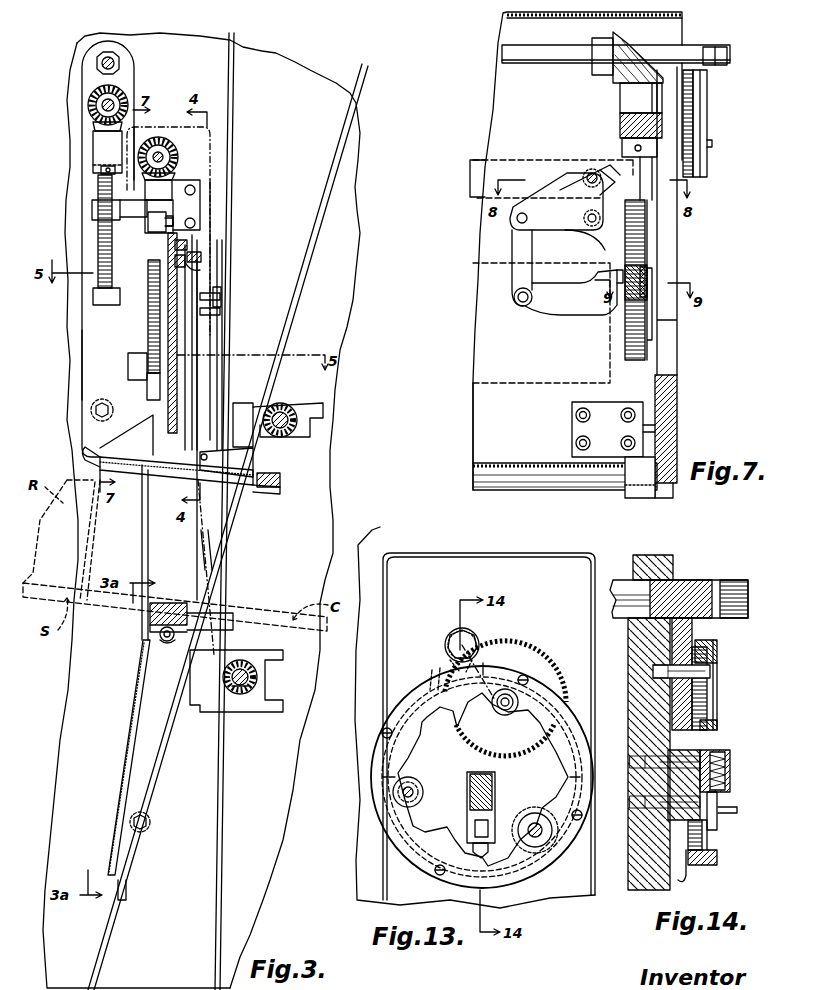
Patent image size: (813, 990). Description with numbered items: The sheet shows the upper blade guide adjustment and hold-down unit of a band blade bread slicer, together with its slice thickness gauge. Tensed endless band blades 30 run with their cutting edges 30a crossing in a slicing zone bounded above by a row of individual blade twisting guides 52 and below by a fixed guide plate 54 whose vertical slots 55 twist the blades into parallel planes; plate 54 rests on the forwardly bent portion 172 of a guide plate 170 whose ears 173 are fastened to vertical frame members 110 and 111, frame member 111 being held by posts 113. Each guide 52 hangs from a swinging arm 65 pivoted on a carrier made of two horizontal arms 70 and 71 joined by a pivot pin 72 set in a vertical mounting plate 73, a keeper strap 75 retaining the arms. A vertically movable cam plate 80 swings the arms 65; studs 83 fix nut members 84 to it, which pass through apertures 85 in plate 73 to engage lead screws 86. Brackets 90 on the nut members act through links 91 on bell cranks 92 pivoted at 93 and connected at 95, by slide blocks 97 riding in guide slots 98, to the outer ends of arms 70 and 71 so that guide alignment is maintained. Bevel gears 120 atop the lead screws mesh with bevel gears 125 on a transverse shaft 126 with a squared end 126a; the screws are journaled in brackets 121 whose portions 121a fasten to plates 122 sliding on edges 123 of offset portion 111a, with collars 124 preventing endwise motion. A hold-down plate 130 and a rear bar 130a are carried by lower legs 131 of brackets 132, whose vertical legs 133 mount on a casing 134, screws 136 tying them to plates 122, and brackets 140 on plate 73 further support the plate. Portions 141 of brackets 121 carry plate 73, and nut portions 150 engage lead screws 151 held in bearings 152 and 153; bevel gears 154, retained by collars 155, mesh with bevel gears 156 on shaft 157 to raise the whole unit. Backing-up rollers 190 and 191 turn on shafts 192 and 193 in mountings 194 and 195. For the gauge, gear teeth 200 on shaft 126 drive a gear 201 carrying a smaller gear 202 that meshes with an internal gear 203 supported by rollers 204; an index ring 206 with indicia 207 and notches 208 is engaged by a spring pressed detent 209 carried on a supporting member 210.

In FIG. 3, the endless band blades 30 is at (355, 132).
In FIG. 3, the cutting edges 30a is at (205, 545).
In FIG. 3, the blade twisting guides 52 is at (263, 465).
In FIG. 3, the fixed blade guide member or plate 54 is at (150, 618).
In FIG. 3, the vertical blade receiving guide slots 55 is at (233, 618).
In FIG. 3, the swinging arms 65 is at (213, 330).
In FIG. 3, the horizontal bar or arm 70 is at (186, 263).
In FIG. 7, the horizontal bar or arm 70 is at (470, 182).
In FIG. 3, the horizontal bar or arm 71 is at (200, 270).
In FIG. 3, the pivot pin 72 is at (187, 245).
In FIG. 3, the mounting plate 73 is at (180, 236).
In FIG. 7, the mounting plate 73 is at (487, 405).
In FIG. 3, the keeper strap 75 is at (201, 256).
In FIG. 3, the cam member or plate 80 is at (195, 320).
In FIG. 7, the cam member or plate 80 is at (473, 358).
In FIG. 7, the studs 83 is at (648, 280).
In FIG. 3, the nut members 84 is at (150, 345).
In FIG. 7, the nut members 84 is at (648, 264).
In FIG. 7, the apertures 85 is at (615, 320).
In FIG. 3, the vertical lead screws 86 is at (148, 310).
In FIG. 7, the vertical lead screws 86 is at (650, 232).
In FIG. 7, the brackets 90 is at (545, 312).
In FIG. 7, the links 91 is at (533, 258).
In FIG. 7, the bell cranks 92 is at (556, 201).
In FIG. 7, the pivot 93 is at (585, 245).
In FIG. 7, the connection 95 is at (600, 176).
In FIG. 7, the slide block 97 is at (590, 176).
In FIG. 7, the longitudinal guide slot 98 is at (613, 168).
In FIG. 7, the vertical frame member 110 is at (677, 420).
In FIG. 3, the vertical frame member 111 is at (78, 436).
In FIG. 3, the offset portion 111a is at (82, 357).
In FIG. 3, the brackets or posts 113 is at (91, 412).
In FIG. 3, the bevel gears 120 is at (175, 172).
In FIG. 7, the bevel gears 120 is at (645, 80).
In FIG. 3, the brackets 121 is at (152, 213).
In FIG. 7, the brackets 121 is at (620, 124).
In FIG. 3, the portions 121a is at (200, 212).
In FIG. 3, the plates 122 is at (200, 168).
In FIG. 7, the plates 122 is at (668, 310).
In FIG. 13, the plates 122 is at (470, 572).
In FIG. 14, the plates 122 is at (665, 540).
In FIG. 3, the vertical edges 123 is at (128, 366).
In FIG. 3, the collars 124 is at (148, 225).
In FIG. 7, the collars 124 is at (622, 148).
In FIG. 3, the bevel gears 125 is at (158, 150).
In FIG. 7, the bevel gears 125 is at (613, 33).
In FIG. 3, the transverse shaft 126 is at (185, 85).
In FIG. 7, the transverse shaft 126 is at (545, 44).
In FIG. 13, the transverse shaft 126 is at (455, 630).
In FIG. 14, the transverse shaft 126 is at (718, 585).
In FIG. 7, the squared end 126a is at (727, 60).
In FIG. 13, the squared end 126a is at (450, 643).
In FIG. 14, the squared end 126a is at (740, 588).
In FIG. 3, the hold-down plate 130 is at (160, 480).
In FIG. 7, the hold-down plate 130 is at (473, 480).
In FIG. 3, the bar 130a is at (280, 480).
In FIG. 3, the lower legs 131 is at (155, 490).
In FIG. 7, the lower legs 131 is at (630, 500).
In FIG. 3, the bracket members 132 is at (256, 500).
In FIG. 3, the vertically extending legs 133 is at (222, 341).
In FIG. 3, the casing 134 is at (200, 166).
In FIG. 3, the screws 136 is at (222, 295).
In FIG. 3, the brackets 140 is at (150, 412).
In FIG. 7, the brackets 140 is at (572, 432).
In FIG. 3, the portions 141 is at (178, 218).
In FIG. 3, the nut portions 150 is at (92, 210).
In FIG. 3, the vertical lead screws 151 is at (98, 190).
In FIG. 3, the bearing 152 is at (93, 296).
In FIG. 3, the bearing 153 is at (100, 150).
In FIG. 3, the bevel gears 154 is at (93, 124).
In FIG. 3, the collars 155 is at (98, 170).
In FIG. 3, the bevel gears 156 is at (88, 100).
In FIG. 3, the horizontal transverse shaft 157 is at (98, 90).
In FIG. 3, the guide plate 170 is at (125, 773).
In FIG. 3, the forwardly bent portion 172 is at (160, 636).
In FIG. 3, the ears 173 is at (163, 644).
In FIG. 3, the backing-up roller 190 is at (285, 410).
In FIG. 3, the backing-up roller 191 is at (238, 695).
In FIG. 3, the shaft 192 is at (300, 410).
In FIG. 3, the shaft 193 is at (232, 700).
In FIG. 3, the mounting 194 is at (245, 405).
In FIG. 3, the mounting 195 is at (228, 710).
In FIG. 7, the gear teeth 200 is at (690, 60).
In FIG. 13, the gear teeth 200 is at (450, 662).
In FIG. 14, the gear teeth 200 is at (680, 582).
In FIG. 13, the gear 201 is at (565, 638).
In FIG. 14, the gear 201 is at (692, 630).
In FIG. 13, the smaller gear 202 is at (522, 757).
In FIG. 14, the smaller gear 202 is at (707, 705).
In FIG. 13, the internal gear 203 is at (432, 680).
In FIG. 14, the internal gear 203 is at (708, 645).
In FIG. 13, the pulleys or rollers 204 is at (412, 790).
In FIG. 14, the pulleys or rollers 204 is at (686, 850).
In FIG. 13, the index ring 206 is at (530, 880).
In FIG. 14, the index ring 206 is at (707, 842).
In FIG. 13, the indicia 207 is at (466, 884).
In FIG. 13, the notches 208 is at (455, 725).
In FIG. 13, the spring pressed detent 209 is at (467, 822).
In FIG. 14, the spring pressed detent 209 is at (720, 822).
In FIG. 14, the supporting member 210 is at (730, 768).